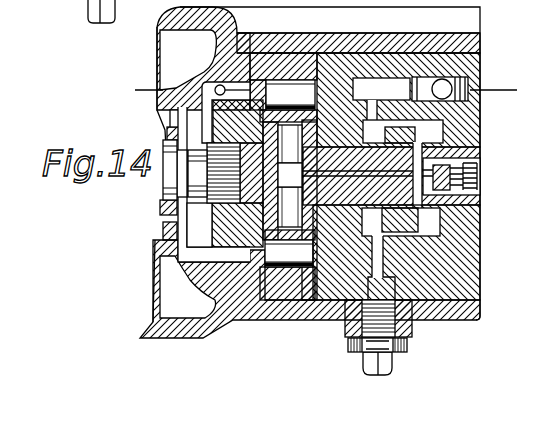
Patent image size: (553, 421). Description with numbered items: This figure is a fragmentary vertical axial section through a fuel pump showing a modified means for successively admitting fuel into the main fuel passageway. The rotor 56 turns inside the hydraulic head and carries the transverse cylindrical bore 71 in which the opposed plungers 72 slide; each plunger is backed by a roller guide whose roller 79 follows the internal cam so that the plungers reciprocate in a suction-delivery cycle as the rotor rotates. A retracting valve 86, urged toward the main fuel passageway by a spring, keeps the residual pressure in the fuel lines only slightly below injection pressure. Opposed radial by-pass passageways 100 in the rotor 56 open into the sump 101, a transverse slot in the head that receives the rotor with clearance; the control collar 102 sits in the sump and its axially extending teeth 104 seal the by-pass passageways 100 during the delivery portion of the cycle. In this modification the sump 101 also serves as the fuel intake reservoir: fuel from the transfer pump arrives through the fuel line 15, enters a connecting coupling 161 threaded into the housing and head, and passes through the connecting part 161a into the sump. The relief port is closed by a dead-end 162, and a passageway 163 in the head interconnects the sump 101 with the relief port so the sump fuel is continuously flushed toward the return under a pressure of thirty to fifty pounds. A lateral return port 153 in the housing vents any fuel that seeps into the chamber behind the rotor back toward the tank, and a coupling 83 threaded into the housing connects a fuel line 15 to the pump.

The fuel line 15 is at (140, 84).
The rotor 56 is at (472, 205).
The cylindrical bore 71 is at (293, 171).
The plungers 72 is at (290, 176).
The roller 79 is at (290, 173).
The coupling 83 is at (60, 0).
The retracting valve 86 is at (478, 168).
The by-pass passageways 100 is at (418, 150).
The sump 101 is at (443, 128).
The control collar 102 is at (430, 237).
The teeth 104 is at (432, 220).
The return port 153 is at (215, 90).
The connecting coupling 161 is at (410, 345).
The connecting part 161a is at (378, 268).
The dead-end 162 is at (352, 87).
The passageway 163 is at (422, 89).